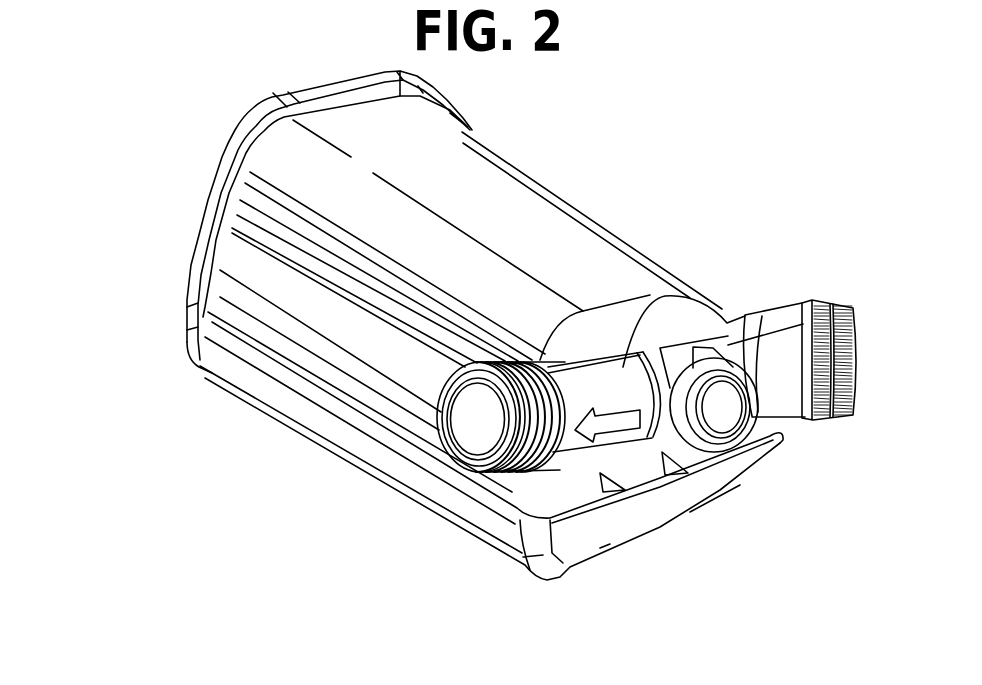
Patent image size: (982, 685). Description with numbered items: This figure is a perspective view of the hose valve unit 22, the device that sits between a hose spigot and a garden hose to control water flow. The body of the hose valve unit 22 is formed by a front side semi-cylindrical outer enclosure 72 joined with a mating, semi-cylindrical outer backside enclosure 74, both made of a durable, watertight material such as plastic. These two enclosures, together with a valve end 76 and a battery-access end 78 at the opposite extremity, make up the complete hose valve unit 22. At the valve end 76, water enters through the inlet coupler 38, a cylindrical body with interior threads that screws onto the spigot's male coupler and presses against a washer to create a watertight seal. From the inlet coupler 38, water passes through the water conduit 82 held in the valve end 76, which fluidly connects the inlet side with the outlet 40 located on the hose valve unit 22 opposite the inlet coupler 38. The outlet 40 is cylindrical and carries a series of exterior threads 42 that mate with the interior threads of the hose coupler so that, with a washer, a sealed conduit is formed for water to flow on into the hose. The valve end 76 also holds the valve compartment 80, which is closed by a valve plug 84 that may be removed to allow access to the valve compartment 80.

The hose valve unit 22 is at (567, 170).
The front side semi-cylindrical outer enclosure 72 is at (603, 248).
The battery-access end 78 is at (187, 298).
The semi-cylindrical outer backside enclosure 74 is at (470, 537).
The valve end 76 is at (647, 472).
The outlet 40 is at (460, 460).
The exterior threads 42 is at (523, 473).
The water conduit 82 is at (623, 367).
The valve plug 84 is at (718, 417).
The inlet coupler 38 is at (788, 303).
The valve compartment 80 is at (825, 307).